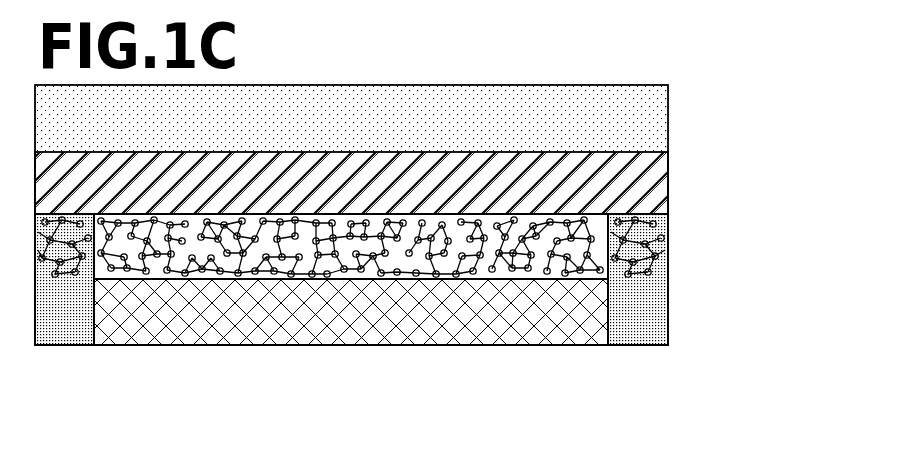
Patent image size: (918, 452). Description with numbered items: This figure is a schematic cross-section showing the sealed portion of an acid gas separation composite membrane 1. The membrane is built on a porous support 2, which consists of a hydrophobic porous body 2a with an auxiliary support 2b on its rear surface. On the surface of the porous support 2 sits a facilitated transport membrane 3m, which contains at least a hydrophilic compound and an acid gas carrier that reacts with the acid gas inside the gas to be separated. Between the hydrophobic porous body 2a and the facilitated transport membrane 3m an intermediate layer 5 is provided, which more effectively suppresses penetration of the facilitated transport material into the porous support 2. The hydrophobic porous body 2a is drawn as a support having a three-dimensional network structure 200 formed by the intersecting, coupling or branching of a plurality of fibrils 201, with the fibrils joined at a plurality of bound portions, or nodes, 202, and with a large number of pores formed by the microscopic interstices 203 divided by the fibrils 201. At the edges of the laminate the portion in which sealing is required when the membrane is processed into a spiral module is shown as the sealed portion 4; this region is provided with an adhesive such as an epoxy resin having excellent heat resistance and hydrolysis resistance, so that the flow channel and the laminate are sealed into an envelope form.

The acid gas separation composite membrane 1 is at (783, 98).
The porous support 2 is at (747, 220).
The hydrophobic porous body 2a is at (417, 328).
The auxiliary support 2b is at (662, 298).
The facilitated transport membrane 3m is at (658, 107).
The sealed portion 4 is at (660, 327).
The intermediate layer 5 is at (660, 168).
The three-dimensional network structure 200 is at (348, 328).
The fibrils 201 is at (117, 267).
The bound portions (nodes) 202 is at (177, 272).
The microscopic interstices 203 is at (255, 275).